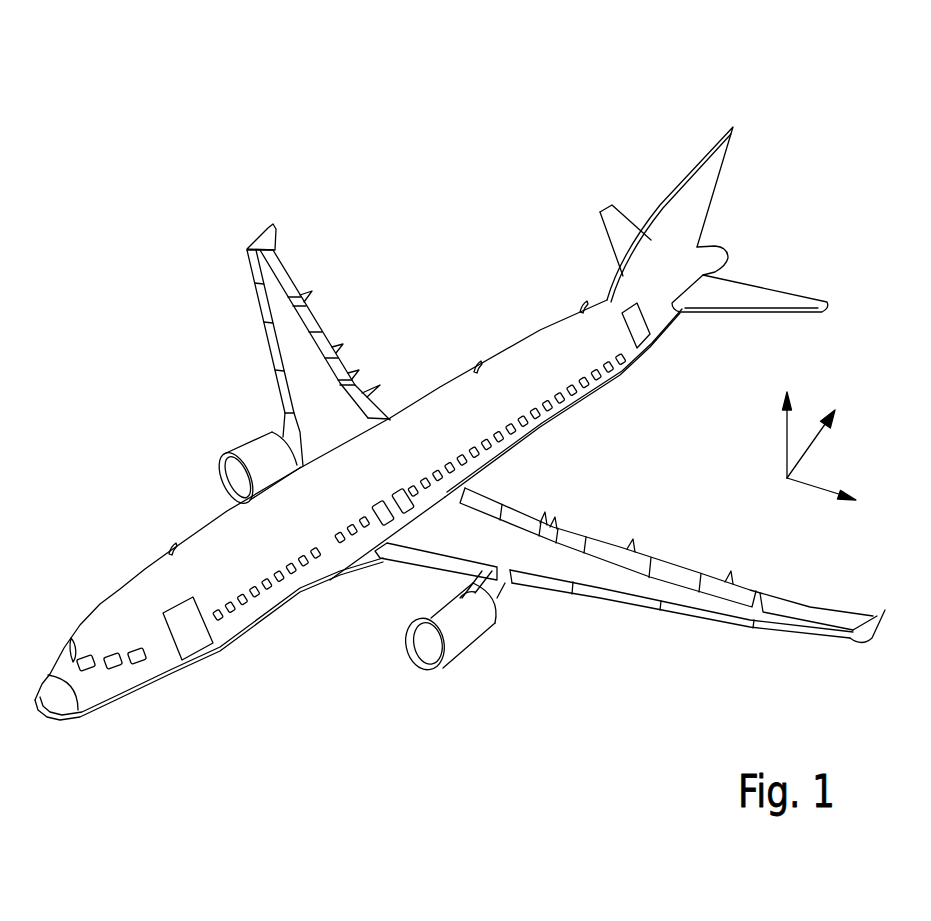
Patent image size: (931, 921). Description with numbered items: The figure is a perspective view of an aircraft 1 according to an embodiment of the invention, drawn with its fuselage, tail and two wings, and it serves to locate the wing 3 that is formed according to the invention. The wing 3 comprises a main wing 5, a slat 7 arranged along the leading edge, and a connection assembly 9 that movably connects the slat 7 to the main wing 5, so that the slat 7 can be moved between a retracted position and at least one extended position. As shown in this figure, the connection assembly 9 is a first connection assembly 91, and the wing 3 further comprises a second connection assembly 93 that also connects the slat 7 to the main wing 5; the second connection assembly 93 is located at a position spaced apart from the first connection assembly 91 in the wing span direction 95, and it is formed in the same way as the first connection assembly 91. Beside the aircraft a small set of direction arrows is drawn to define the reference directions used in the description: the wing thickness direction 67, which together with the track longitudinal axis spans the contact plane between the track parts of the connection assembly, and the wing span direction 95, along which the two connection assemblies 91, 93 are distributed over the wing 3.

The aircraft 1 is at (234, 121).
The wing 3 is at (345, 278).
The main wing 5 is at (576, 572).
The slat 7 is at (617, 598).
The connection assembly 9 is at (639, 656).
The first connection assembly 91 is at (566, 615).
The second connection assembly 93 is at (661, 630).
The wing thickness direction 67 is at (792, 428).
The wing span direction 95 is at (813, 488).